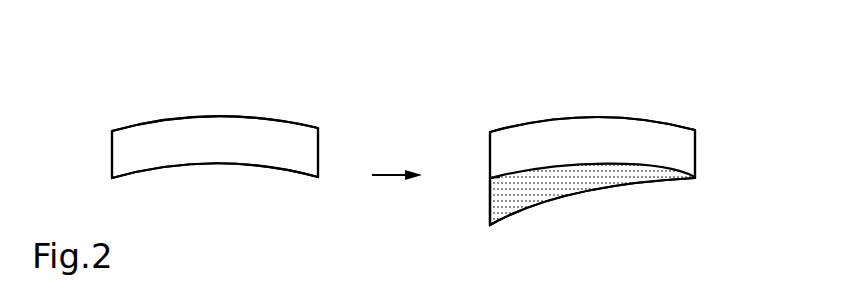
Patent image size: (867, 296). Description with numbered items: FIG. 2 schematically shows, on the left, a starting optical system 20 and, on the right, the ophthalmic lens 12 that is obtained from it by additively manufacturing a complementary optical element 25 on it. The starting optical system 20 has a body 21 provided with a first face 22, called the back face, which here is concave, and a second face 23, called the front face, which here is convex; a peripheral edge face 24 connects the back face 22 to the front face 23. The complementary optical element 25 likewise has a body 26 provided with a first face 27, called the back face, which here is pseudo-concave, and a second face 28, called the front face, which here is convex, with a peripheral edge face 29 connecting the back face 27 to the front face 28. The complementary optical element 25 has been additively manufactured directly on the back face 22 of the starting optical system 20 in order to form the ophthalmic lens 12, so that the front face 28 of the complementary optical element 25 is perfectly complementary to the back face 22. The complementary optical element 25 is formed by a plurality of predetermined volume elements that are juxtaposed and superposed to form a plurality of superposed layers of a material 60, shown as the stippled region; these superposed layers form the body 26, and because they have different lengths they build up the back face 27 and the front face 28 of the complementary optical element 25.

The ophthalmic lens 12 is at (737, 74).
The starting optical system 20 is at (337, 74).
The body 21 is at (120, 152).
The back face 22 is at (215, 168).
The front face 23 is at (213, 118).
The peripheral edge face 24 is at (318, 141).
The complementary optical element 25 is at (516, 240).
The body 26 is at (555, 198).
The back face 27 is at (606, 194).
The front face 28 is at (638, 183).
The peripheral edge face 29 is at (490, 209).
The material 60 is at (490, 183).